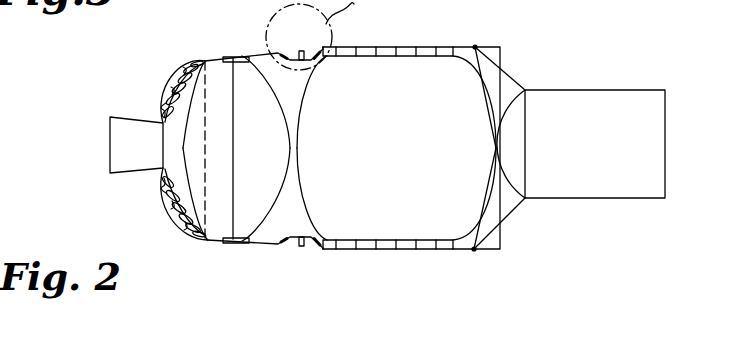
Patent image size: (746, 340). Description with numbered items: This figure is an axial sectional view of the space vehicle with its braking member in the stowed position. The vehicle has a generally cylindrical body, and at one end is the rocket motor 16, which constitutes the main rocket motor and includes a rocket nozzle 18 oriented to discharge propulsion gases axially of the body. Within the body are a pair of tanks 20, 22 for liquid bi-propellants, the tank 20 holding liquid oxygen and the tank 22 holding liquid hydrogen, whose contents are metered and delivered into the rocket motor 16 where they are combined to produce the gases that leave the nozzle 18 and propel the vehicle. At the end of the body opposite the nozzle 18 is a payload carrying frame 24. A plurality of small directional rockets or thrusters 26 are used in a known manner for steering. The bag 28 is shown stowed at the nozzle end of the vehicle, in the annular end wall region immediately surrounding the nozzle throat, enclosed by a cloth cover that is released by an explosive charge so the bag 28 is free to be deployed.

The rocket motor 16 is at (150, 179).
The rocket nozzle 18 is at (133, 123).
The liquid oxygen tank 20 is at (260, 213).
The liquid hydrogen tank 22 is at (418, 67).
The payload carrying frame 24 is at (563, 198).
The directional rockets or thrusters 26 is at (293, 43).
The bag 28 is at (187, 225).